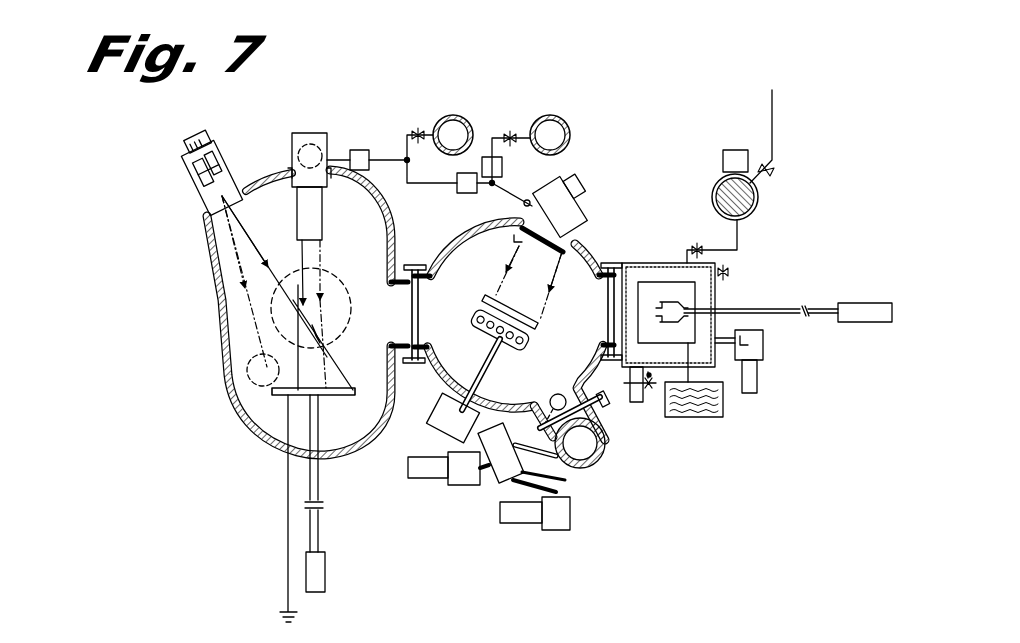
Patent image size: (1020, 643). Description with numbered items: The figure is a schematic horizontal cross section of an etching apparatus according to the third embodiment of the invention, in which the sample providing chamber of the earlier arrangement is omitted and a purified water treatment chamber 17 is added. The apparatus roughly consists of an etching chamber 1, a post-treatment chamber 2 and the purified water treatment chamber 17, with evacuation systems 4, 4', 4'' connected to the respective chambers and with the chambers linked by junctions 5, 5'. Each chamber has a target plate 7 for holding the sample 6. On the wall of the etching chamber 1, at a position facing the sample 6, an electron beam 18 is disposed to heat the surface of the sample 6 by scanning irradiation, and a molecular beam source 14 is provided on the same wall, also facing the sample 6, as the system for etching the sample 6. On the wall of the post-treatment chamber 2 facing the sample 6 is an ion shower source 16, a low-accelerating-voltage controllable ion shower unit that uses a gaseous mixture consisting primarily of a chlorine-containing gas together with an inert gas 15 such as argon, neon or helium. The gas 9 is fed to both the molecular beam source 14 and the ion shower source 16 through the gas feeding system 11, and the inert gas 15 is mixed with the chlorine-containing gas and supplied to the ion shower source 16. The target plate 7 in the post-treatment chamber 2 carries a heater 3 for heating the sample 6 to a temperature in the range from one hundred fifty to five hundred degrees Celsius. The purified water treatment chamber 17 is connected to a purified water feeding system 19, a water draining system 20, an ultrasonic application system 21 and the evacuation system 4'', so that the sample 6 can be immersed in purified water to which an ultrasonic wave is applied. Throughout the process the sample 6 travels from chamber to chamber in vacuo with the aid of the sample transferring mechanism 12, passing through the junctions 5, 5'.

The etching chamber 1 is at (215, 302).
The post-treatment chamber 2 is at (584, 270).
The heater 3 is at (486, 331).
The evacuation system 4 is at (253, 339).
The evacuation system 4' is at (531, 492).
The evacuation system 4'' is at (775, 363).
The junction 5 is at (413, 354).
The junction 5' is at (613, 450).
The sample 6 is at (580, 245).
The target plate 7 is at (278, 397).
The gas 9 is at (457, 114).
The gas feeding system 11 is at (372, 148).
The sample transferring mechanism 12 is at (856, 300).
The molecular beam source 14 is at (303, 132).
The inert gas 15 is at (560, 114).
The ion shower source 16 is at (558, 200).
The purified water treatment chamber 17 is at (656, 262).
The electron beam 18 is at (182, 168).
The purified water feeding system 19 is at (760, 203).
The water draining system 20 is at (640, 403).
The ultrasonic application system 21 is at (723, 415).